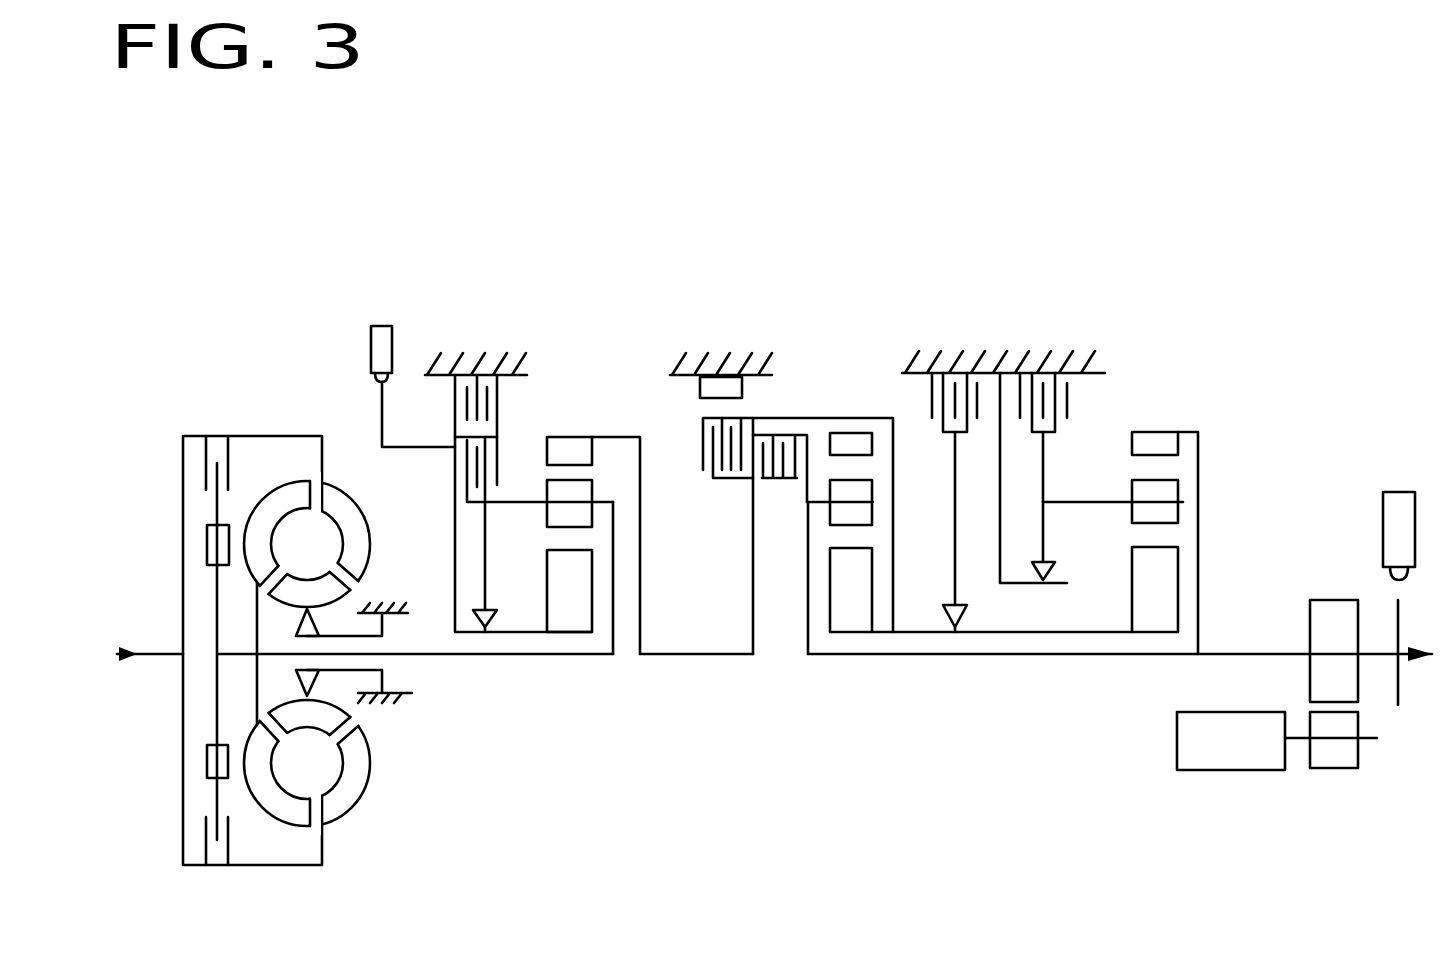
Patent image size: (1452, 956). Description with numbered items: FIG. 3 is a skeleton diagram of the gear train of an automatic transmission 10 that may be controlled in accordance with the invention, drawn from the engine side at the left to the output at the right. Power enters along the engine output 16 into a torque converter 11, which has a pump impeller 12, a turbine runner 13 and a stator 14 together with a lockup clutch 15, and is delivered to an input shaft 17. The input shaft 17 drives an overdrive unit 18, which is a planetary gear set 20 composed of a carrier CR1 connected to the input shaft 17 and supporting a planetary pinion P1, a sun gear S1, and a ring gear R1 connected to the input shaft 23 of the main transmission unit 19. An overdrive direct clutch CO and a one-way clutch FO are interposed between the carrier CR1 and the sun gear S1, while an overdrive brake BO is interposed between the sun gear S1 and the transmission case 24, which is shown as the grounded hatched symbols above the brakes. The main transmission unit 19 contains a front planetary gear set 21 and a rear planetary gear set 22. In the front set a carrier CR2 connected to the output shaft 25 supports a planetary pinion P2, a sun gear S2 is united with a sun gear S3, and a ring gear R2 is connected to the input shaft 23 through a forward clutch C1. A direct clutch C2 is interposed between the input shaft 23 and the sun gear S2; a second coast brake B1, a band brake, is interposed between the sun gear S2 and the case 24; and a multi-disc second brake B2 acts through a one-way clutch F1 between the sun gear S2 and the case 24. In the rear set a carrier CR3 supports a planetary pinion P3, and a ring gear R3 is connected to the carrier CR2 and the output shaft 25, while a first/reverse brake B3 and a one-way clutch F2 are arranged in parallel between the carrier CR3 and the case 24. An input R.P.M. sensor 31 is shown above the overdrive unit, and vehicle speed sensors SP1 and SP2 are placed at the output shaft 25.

The automatic transmission 10 is at (778, 270).
The torque converter 11 is at (278, 400).
The pump impeller 12 is at (361, 512).
The turbine runner 13 is at (291, 482).
The stator 14 is at (358, 582).
The lockup clutch 15 is at (205, 444).
The engine output shaft 16 is at (160, 655).
The input shaft 17 is at (455, 656).
The overdrive unit 18 is at (586, 318).
The main transmission unit 19 is at (1042, 318).
The overdrive planetary gear set 20 is at (614, 366).
The front planetary gear set 21 is at (859, 365).
The rear planetary gear set 22 is at (1173, 392).
The input shaft of the main transmission unit 23 is at (710, 656).
The transmission case 24 is at (513, 368).
The output shaft 25 is at (1246, 652).
The input R.P.M. sensor 31 is at (383, 326).
The overdrive direct clutch CO is at (456, 444).
The overdrive brake BO is at (498, 405).
The one-way clutch FO is at (492, 621).
The ring gear R1 is at (573, 435).
The planetary pinion P1 is at (548, 530).
The sun gear S1 is at (574, 634).
The carrier CR1 is at (617, 518).
The forward clutch C1 is at (789, 480).
The direct clutch C2 is at (702, 451).
The second coast brake B1 is at (748, 388).
The second brake B2 is at (932, 412).
The first/reverse brake B3 is at (1068, 400).
The one-way clutch F1 is at (967, 615).
The one-way clutch F2 is at (1056, 573).
The ring gear R2 is at (847, 432).
The planetary pinion P2 is at (874, 510).
The sun gear S2 is at (855, 634).
The carrier CR2 is at (808, 580).
The ring gear R3 is at (1160, 432).
The planetary pinion P3 is at (1180, 490).
The sun gear S3 is at (1178, 565).
The carrier CR3 is at (1080, 502).
The vehicle speed sensor SP1 is at (1240, 770).
The vehicle speed sensor SP2 is at (1412, 470).